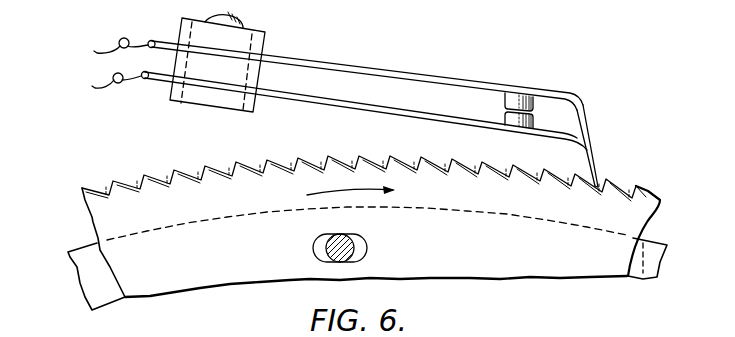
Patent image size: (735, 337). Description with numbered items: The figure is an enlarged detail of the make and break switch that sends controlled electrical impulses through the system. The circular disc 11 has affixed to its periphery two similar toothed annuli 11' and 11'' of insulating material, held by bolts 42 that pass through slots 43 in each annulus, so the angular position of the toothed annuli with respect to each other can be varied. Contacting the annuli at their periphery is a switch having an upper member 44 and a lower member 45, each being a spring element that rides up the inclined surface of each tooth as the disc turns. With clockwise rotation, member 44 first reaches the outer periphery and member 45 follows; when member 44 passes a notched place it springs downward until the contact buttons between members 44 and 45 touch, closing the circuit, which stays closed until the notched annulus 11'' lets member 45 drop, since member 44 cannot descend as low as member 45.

The circular disc 11 is at (392, 274).
The toothed insulating annulus 11' is at (677, 231).
The toothed insulating annulus 11'' is at (407, 226).
The bolt 42 is at (315, 247).
The slot 43 is at (370, 248).
The upper member 44 is at (477, 74).
The lower member 45 is at (562, 133).